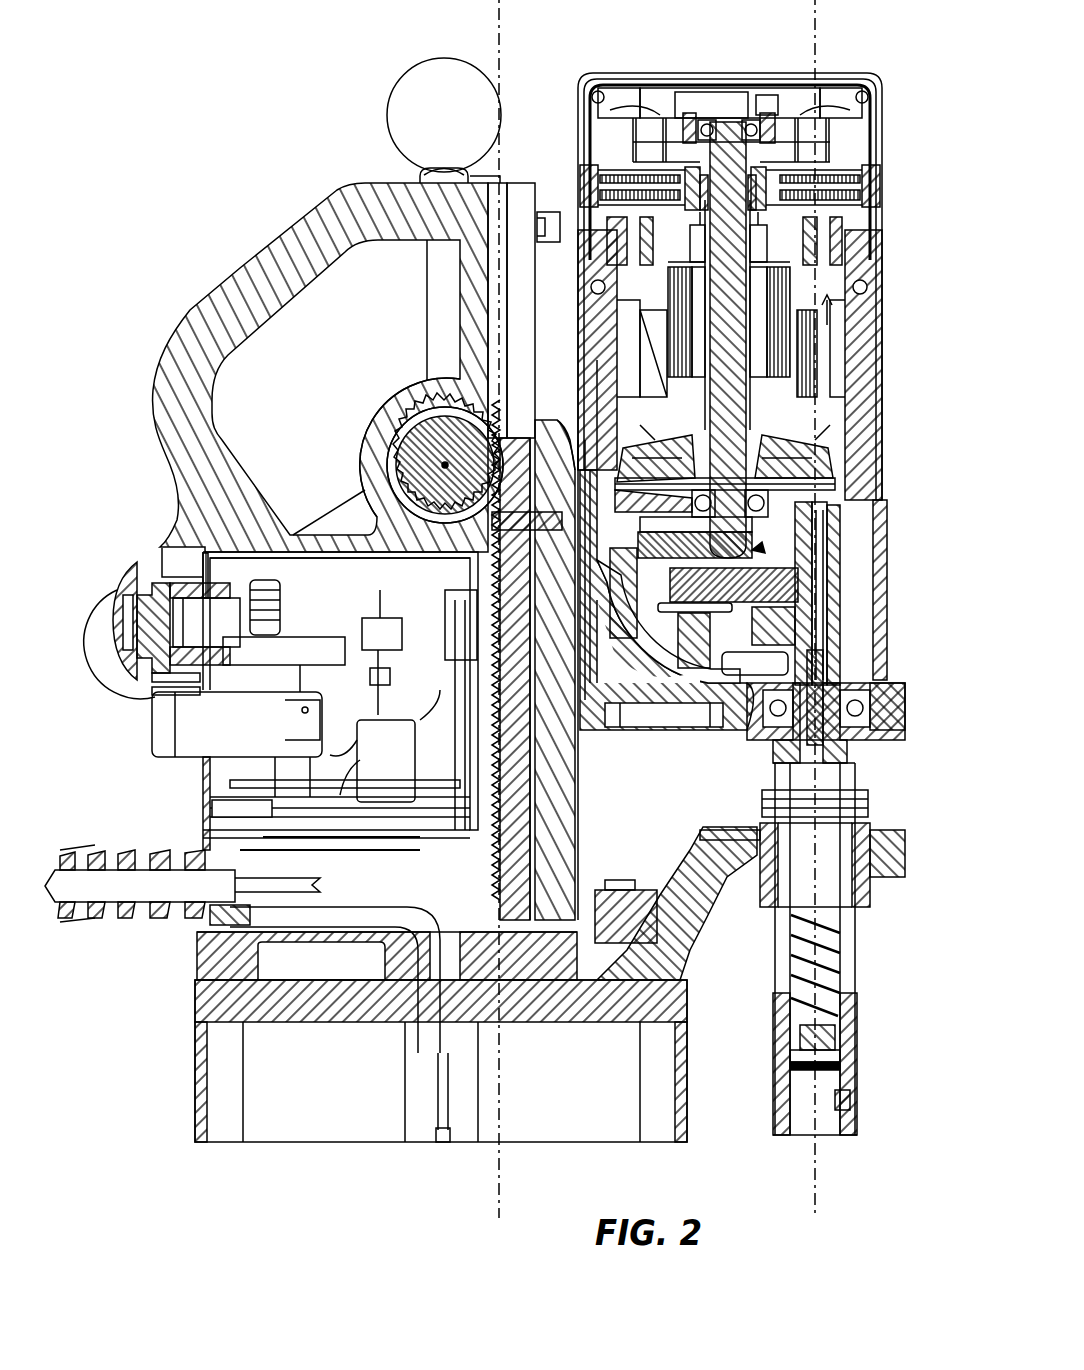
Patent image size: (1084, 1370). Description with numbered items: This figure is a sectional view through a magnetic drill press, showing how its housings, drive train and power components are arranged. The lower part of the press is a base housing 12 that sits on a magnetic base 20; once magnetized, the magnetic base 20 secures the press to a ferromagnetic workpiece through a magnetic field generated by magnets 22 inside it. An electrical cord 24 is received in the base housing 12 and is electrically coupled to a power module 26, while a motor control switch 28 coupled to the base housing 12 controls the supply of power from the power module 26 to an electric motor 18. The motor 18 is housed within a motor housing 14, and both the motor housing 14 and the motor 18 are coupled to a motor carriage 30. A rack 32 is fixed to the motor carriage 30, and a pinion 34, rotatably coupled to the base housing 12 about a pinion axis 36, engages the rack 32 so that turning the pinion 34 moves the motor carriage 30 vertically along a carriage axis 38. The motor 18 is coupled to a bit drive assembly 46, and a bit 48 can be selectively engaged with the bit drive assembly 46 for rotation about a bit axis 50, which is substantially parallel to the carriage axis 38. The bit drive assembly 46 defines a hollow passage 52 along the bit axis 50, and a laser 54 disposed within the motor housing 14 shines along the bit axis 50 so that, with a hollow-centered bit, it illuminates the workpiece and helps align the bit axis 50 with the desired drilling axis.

The base housing 12 is at (210, 952).
The motor housing 14 is at (880, 307).
The electric motor 18 is at (795, 282).
The magnetic base 20 is at (195, 1082).
The magnets 22 is at (337, 1090).
The electrical cord 24 is at (93, 888).
The power module 26 is at (222, 805).
The motor control switch 28 is at (117, 615).
The motor carriage 30 is at (583, 735).
The rack 32 is at (518, 432).
The pinion 34 is at (440, 463).
The pinion axis 36 is at (392, 455).
The carriage axis 38 is at (500, 1156).
The bit drive assembly 46 is at (830, 535).
The bit 48 is at (858, 1020).
The bit axis 50 is at (815, 1158).
The hollow passage 52 is at (880, 668).
The laser 54 is at (815, 500).